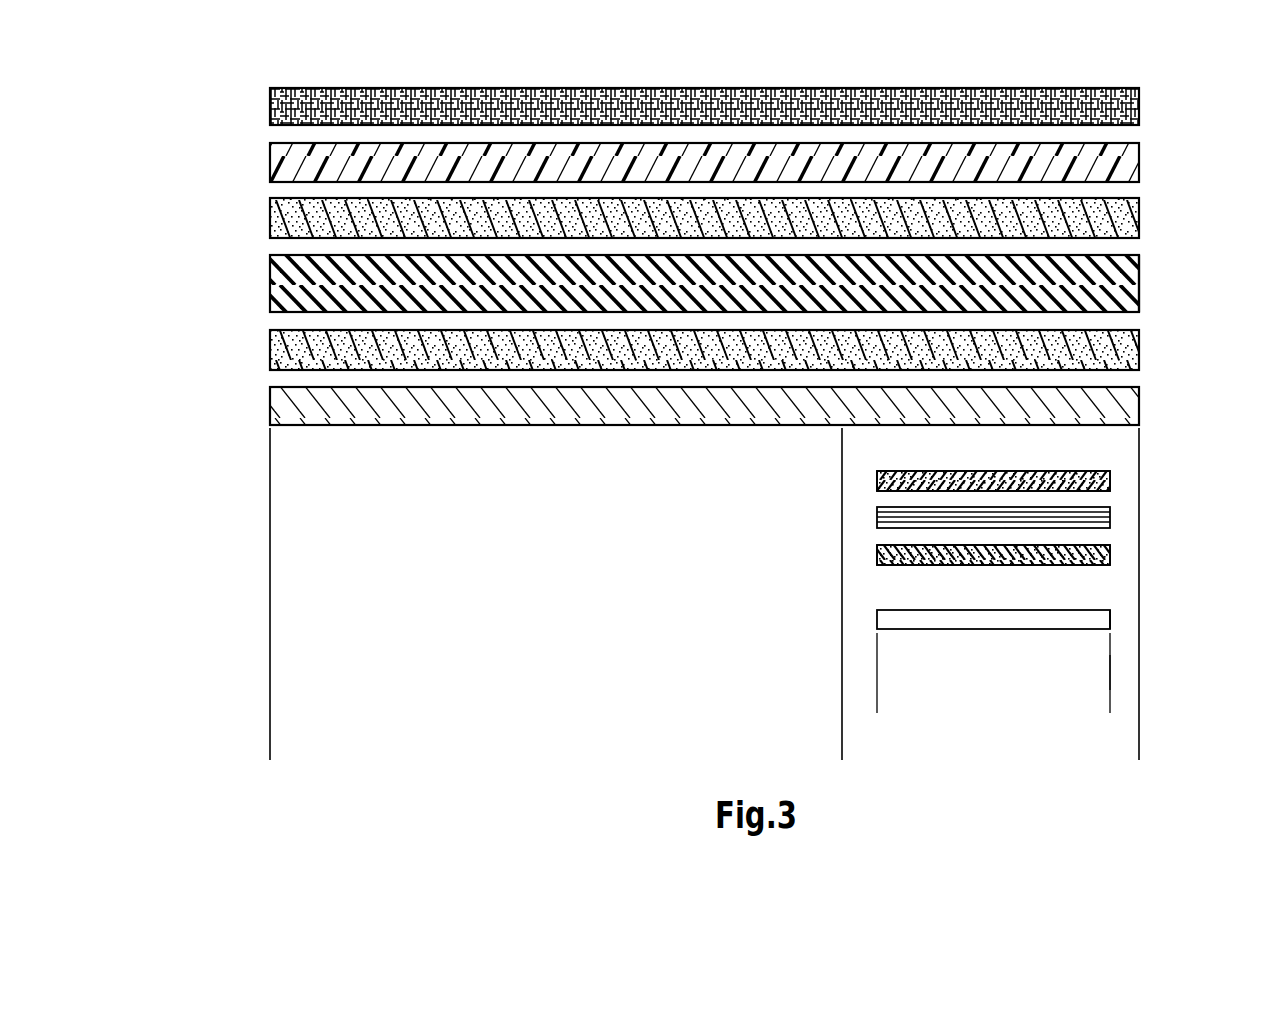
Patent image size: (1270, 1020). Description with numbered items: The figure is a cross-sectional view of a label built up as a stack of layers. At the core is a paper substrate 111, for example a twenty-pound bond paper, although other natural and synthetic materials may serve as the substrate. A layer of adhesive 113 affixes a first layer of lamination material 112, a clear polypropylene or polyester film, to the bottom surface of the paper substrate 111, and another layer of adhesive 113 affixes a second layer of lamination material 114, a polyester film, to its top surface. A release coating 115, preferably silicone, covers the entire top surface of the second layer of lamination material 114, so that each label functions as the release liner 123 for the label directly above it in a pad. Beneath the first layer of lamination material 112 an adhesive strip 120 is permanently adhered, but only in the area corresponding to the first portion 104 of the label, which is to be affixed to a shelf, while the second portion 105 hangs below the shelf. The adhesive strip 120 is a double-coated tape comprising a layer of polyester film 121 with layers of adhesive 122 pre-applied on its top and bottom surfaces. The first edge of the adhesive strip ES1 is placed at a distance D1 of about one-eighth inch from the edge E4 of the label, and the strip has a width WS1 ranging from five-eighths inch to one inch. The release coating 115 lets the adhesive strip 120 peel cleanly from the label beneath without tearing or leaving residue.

The release coating 115 is at (254, 106).
The second layer of lamination material 114 is at (254, 162).
The layer of adhesive 113 is at (254, 218).
The paper substrate 111 is at (254, 283).
The first layer of lamination material 112 is at (254, 406).
The edge E4 is at (1139, 284).
The adhesive strip 120 is at (1011, 519).
The layers of adhesive 122 is at (862, 481).
The layer of polyester film 121 is at (862, 518).
The release liner 123 is at (862, 620).
The first edge of the adhesive strip ES1 is at (1110, 621).
The width of the adhesive strip WS1 is at (877, 699).
The distance D1 is at (1082, 671).
The second portion 105 is at (842, 745).
The first portion 104 is at (1139, 745).